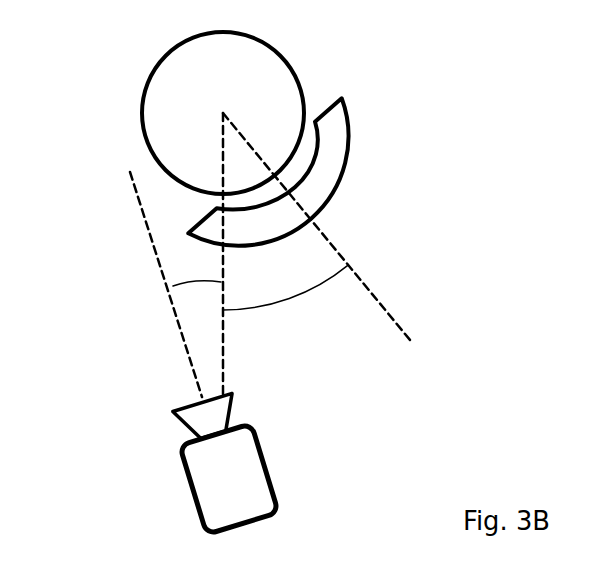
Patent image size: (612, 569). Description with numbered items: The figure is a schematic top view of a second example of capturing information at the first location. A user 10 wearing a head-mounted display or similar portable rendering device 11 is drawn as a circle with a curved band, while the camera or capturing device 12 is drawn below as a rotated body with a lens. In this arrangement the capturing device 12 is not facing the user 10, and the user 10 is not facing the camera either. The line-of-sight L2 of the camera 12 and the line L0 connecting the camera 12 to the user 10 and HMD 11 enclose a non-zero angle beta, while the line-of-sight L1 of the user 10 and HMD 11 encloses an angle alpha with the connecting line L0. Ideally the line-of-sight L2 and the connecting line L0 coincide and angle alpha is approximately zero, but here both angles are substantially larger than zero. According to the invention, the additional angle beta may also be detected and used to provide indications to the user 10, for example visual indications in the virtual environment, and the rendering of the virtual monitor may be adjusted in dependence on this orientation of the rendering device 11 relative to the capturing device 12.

The user 10 is at (142, 115).
The portable rendering device 11 is at (355, 127).
The capturing device 12 is at (185, 478).
The connecting line L0 is at (226, 357).
The line-of-sight of the user L1 is at (393, 313).
The line-of-sight of the camera L2 is at (160, 265).